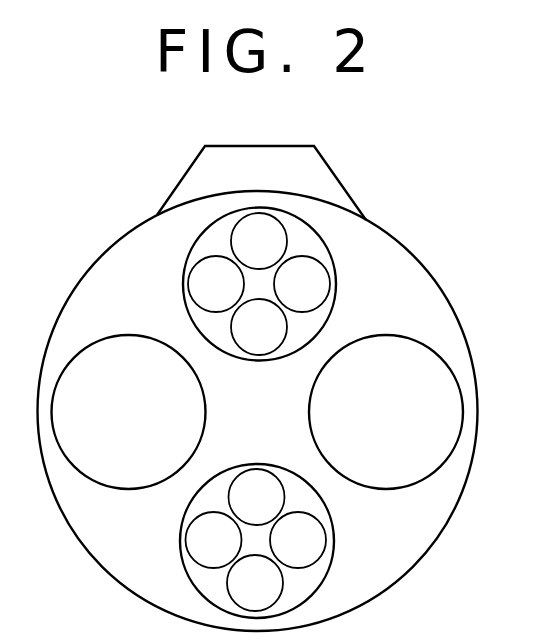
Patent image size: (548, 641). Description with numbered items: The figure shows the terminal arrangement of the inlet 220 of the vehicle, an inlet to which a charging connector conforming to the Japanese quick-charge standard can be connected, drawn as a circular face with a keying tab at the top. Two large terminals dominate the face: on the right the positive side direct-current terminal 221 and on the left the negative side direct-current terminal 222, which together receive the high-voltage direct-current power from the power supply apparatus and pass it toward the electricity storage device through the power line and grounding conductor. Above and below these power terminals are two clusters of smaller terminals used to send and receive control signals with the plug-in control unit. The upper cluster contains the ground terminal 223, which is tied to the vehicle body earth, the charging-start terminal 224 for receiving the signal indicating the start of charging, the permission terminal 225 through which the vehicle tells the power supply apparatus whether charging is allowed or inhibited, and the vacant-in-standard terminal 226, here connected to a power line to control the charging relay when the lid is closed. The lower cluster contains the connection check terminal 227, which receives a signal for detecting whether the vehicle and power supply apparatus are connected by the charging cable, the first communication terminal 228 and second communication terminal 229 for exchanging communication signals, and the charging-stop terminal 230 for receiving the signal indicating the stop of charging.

The inlet 220 is at (412, 229).
The DCLP terminal 221 is at (399, 335).
The DCLN terminal 222 is at (135, 335).
The G terminal 223 is at (283, 228).
The S1 terminal 224 is at (197, 264).
The P terminal 225 is at (258, 355).
The PIB terminal 226 is at (326, 268).
The C terminal 227 is at (256, 470).
The A terminal 228 is at (187, 531).
The B terminal 229 is at (322, 524).
The S2 terminal 230 is at (284, 586).